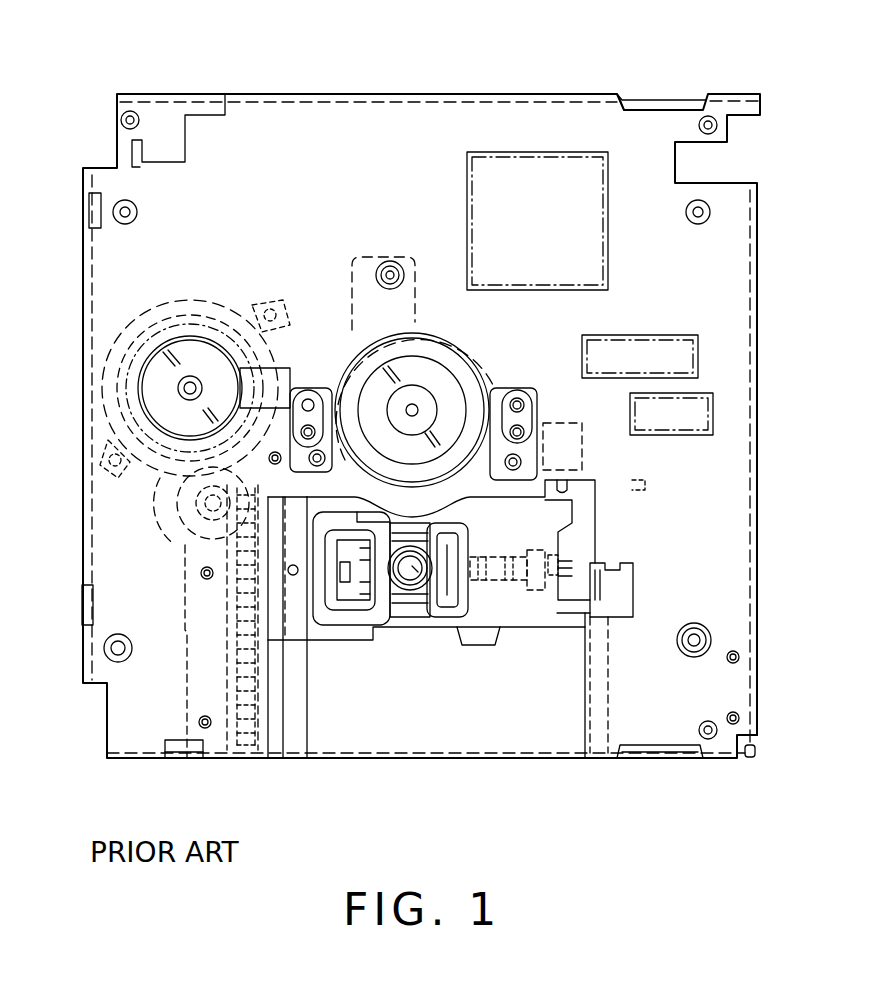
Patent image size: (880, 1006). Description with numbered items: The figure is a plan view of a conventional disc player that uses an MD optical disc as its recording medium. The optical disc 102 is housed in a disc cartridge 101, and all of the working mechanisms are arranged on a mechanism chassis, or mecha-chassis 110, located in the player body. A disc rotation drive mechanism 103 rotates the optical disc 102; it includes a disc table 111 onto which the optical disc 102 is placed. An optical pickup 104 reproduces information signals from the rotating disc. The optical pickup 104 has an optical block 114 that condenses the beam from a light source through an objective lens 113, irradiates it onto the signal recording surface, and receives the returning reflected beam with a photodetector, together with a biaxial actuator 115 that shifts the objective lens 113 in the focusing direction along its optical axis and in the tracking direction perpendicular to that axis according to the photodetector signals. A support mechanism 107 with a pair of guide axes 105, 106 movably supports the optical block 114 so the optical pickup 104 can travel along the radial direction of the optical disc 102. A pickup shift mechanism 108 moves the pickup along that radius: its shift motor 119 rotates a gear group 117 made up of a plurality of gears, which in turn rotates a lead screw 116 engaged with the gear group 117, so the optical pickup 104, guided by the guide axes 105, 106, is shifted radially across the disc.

The disc cartridge 101 is at (507, 112).
The optical disc 102 is at (331, 163).
The disc rotation drive mechanism 103 is at (440, 382).
The optical pickup 104 is at (408, 573).
The guide axis 105 is at (293, 740).
The guide axis 106 is at (593, 723).
The support mechanism 107 is at (607, 585).
The pickup shift mechanism 108 is at (142, 517).
The mecha-chassis 110 is at (730, 487).
The disc table 111 is at (422, 358).
The objective lens 113 is at (392, 623).
The optical block 114 is at (510, 613).
The biaxial actuator 115 is at (443, 593).
The lead screw 116 is at (238, 712).
The gear group 117 is at (180, 527).
The shift motor 119 is at (148, 364).